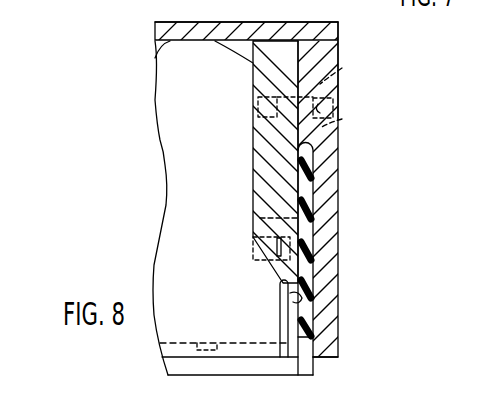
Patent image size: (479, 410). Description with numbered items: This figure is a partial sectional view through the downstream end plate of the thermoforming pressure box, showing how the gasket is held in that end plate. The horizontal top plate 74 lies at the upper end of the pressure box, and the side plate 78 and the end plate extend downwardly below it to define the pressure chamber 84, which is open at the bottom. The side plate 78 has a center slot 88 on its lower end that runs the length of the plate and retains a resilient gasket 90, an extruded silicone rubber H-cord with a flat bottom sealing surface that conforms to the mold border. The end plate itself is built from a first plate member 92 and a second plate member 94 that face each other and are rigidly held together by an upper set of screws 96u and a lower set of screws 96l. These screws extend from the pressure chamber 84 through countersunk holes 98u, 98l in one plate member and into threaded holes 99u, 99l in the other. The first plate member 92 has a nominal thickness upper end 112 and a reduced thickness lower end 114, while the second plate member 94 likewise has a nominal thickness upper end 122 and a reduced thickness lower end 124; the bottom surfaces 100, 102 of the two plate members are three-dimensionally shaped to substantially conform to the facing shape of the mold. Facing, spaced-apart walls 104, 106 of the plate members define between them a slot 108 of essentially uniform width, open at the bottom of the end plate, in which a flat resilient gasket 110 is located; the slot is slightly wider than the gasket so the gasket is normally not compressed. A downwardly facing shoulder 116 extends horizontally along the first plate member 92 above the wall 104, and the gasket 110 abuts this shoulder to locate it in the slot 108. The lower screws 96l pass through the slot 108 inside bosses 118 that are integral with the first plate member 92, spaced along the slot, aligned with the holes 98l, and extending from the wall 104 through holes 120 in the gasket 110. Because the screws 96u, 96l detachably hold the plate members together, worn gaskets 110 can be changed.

The top plate 74 is at (158, 53).
The side plate 78 is at (207, 152).
The pressure chamber 84 is at (160, 170).
The center slot 88 is at (196, 334).
The resilient gasket 90 is at (180, 377).
The first plate member 92 is at (341, 57).
The second plate member 94 is at (253, 80).
The upper set of screws 96u is at (343, 67).
The lower set of screws 96l is at (342, 283).
The upper countersunk holes 98u is at (258, 108).
The lower countersunk holes 98l is at (255, 248).
The upper threaded holes 99u is at (342, 119).
The lower threaded holes 99l is at (322, 258).
The bottom surface of first plate member 100 is at (315, 340).
The bottom surface of second plate member 102 is at (280, 330).
The wall of first plate member 104 is at (340, 317).
The wall of second plate member 106 is at (290, 293).
The slot 108 is at (305, 342).
The flat resilient gasket 110 is at (342, 195).
The nominal thickness upper end 112 is at (322, 102).
The reduced thickness lower end 114 is at (342, 225).
The shoulder 116 is at (342, 128).
The bosses 118 is at (258, 212).
The holes in gasket 120 is at (345, 302).
The nominal thickness upper end of second plate member 122 is at (214, 22).
The reduced thickness lower end of second plate member 124 is at (262, 376).